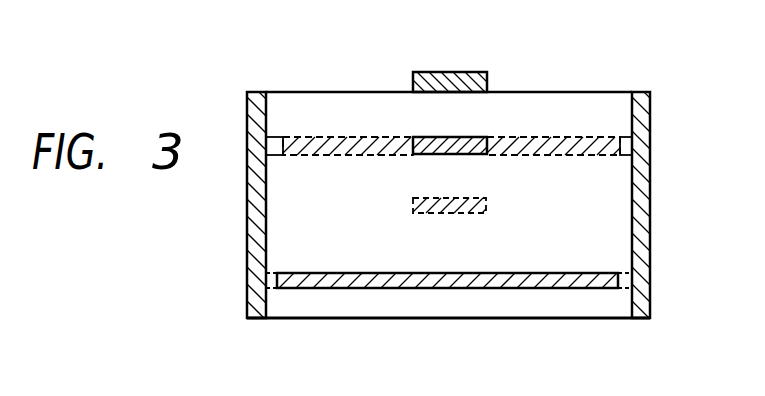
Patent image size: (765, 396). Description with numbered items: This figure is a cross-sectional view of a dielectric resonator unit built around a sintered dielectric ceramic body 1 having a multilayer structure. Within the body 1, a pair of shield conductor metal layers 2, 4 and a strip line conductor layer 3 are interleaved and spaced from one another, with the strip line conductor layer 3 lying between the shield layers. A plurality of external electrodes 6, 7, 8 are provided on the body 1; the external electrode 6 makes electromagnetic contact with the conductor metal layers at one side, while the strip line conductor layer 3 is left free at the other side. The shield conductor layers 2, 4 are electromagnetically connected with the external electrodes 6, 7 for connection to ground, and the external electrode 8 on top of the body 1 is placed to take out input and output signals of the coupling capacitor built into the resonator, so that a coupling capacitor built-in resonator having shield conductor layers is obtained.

The sintered dielectric ceramic body 1 is at (588, 188).
The shield conductor metal layer 2 is at (485, 290).
The strip line conductor layer 3 is at (421, 193).
The shield conductor metal layer 4 is at (480, 137).
The external electrode 6 is at (650, 103).
The external electrode 7 is at (255, 320).
The external electrode 8 is at (477, 72).